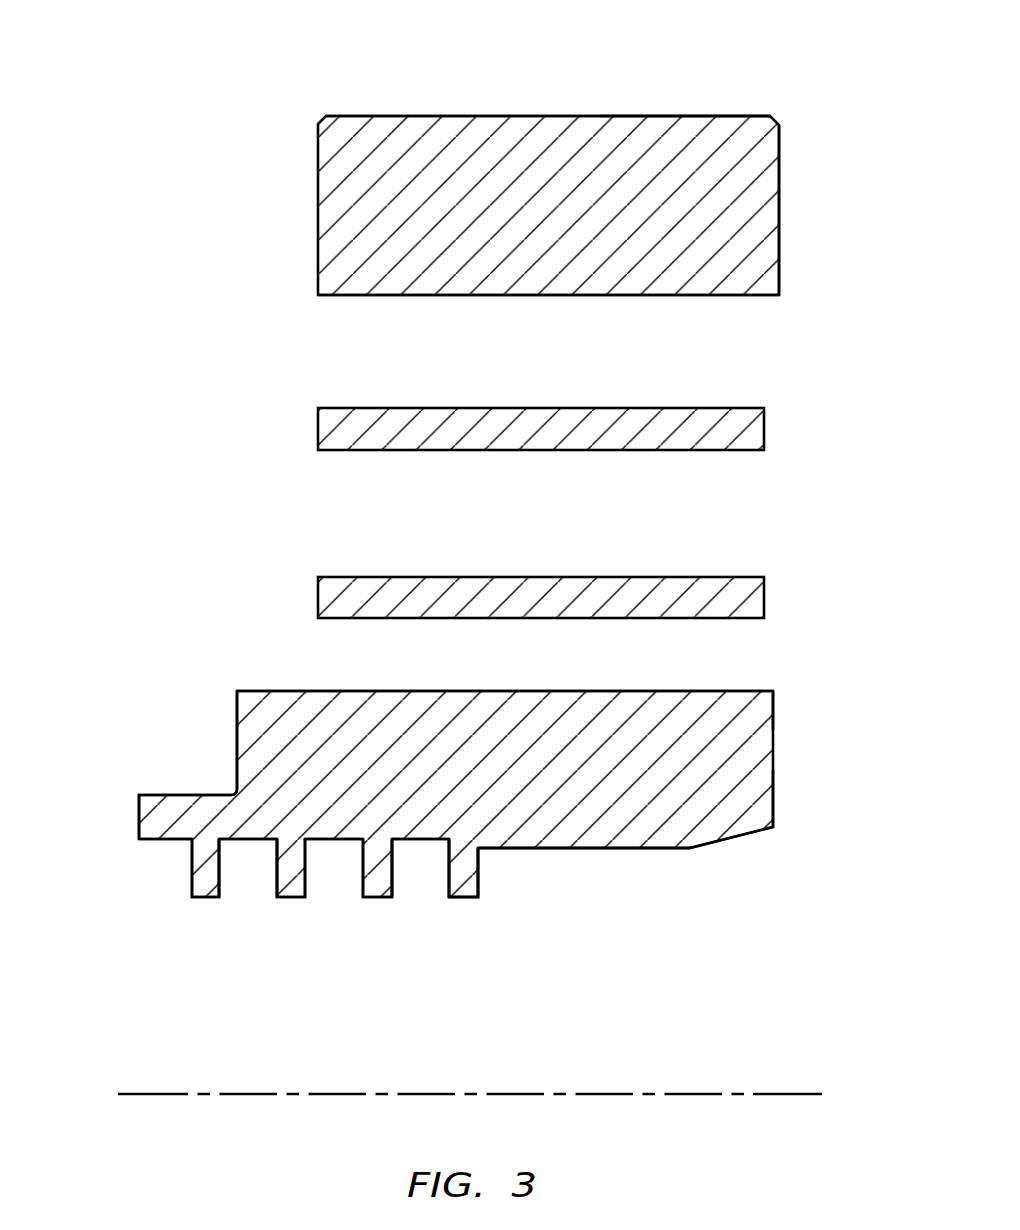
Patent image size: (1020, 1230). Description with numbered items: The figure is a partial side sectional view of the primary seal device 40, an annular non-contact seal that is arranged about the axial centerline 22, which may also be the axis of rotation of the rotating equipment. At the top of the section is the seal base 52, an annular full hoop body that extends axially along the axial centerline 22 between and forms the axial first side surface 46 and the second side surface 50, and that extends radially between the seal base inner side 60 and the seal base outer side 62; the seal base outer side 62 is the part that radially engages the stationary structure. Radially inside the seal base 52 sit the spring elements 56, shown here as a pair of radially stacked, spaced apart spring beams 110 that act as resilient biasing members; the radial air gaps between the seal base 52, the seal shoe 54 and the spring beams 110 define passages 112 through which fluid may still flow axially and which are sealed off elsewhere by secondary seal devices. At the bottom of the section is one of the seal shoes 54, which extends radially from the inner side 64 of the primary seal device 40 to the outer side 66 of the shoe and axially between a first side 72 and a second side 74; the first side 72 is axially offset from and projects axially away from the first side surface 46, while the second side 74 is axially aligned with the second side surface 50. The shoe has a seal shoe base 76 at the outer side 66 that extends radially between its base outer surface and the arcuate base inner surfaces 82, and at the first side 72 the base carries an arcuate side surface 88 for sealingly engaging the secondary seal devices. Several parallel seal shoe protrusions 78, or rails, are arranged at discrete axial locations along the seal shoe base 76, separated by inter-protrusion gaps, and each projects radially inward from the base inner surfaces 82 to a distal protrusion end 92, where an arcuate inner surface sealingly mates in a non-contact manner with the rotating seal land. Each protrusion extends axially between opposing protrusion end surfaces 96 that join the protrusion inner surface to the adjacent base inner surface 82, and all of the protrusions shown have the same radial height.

The axial centerline 22 is at (794, 1092).
The primary seal device 40 is at (546, 194).
The axial first side surface 46 is at (318, 198).
The second side surface 50 is at (779, 202).
The seal base 52 is at (658, 108).
The seal shoe 54 is at (785, 760).
The spring element 56 is at (526, 512).
The seal base inner side 60 is at (495, 295).
The seal base outer side 62 is at (512, 116).
The inner side 64 is at (514, 906).
The outer side 66 is at (462, 691).
The first side 72 is at (139, 812).
The second side 74 is at (773, 790).
The seal shoe base 76 is at (787, 706).
The seal shoe protrusion 78 is at (176, 912).
The base inner surface 82 is at (152, 839).
The side surface 88 is at (237, 745).
The distal protrusion end 92 is at (207, 897).
The protrusion end surface 96 is at (518, 870).
The spring beam 110 is at (318, 429).
The passage 112 is at (523, 368).